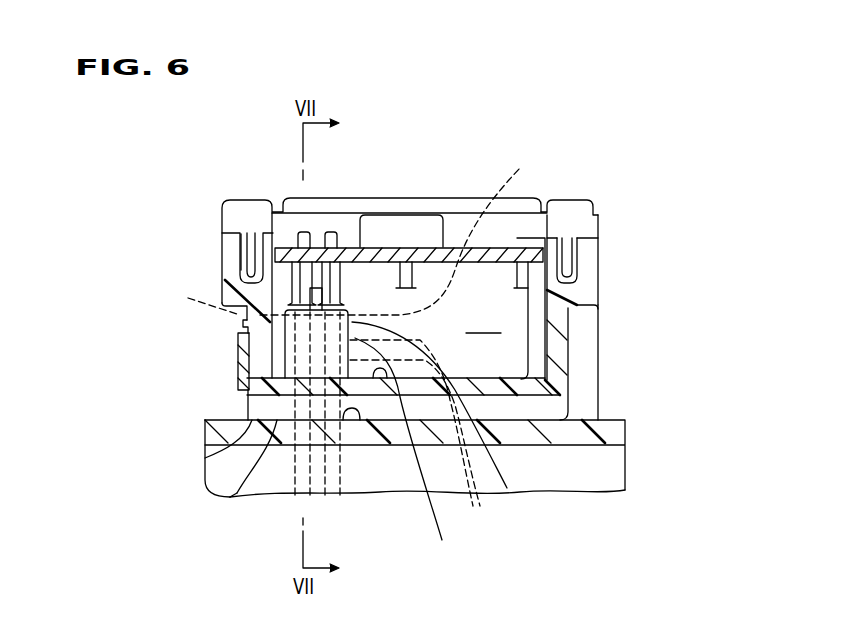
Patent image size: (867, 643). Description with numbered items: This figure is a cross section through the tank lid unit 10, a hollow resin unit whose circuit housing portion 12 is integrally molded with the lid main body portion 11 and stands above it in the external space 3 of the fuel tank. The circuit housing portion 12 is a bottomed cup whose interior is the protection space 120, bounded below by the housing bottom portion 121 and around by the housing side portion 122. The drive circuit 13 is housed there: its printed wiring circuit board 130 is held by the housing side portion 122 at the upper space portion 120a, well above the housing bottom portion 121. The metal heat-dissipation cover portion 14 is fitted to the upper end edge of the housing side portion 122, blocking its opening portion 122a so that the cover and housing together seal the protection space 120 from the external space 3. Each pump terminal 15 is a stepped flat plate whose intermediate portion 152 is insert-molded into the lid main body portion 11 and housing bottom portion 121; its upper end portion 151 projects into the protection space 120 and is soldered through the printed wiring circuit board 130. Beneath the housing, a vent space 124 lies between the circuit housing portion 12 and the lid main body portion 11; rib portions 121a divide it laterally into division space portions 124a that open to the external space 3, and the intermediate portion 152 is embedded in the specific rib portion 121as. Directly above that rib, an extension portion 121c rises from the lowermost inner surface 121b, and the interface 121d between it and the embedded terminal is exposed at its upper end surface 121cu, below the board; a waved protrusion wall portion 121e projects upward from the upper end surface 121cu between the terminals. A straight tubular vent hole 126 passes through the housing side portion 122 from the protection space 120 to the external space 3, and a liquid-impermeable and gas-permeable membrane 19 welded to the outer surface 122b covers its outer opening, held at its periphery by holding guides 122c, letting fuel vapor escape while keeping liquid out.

The external space 3 is at (160, 149).
The tank lid unit 10 is at (605, 221).
The lid main body portion 11 is at (622, 427).
The circuit housing portion 12 is at (568, 358).
The drive circuit 13 is at (572, 255).
The printed wiring circuit board 130 is at (629, 260).
The heat-dissipation cover portion 14 is at (365, 246).
The pump terminal 15 is at (338, 282).
The end portion of pump terminal 151 is at (307, 272).
The liquid-impermeable and gas-permeable membrane 19 is at (238, 352).
The protection space 120 is at (505, 309).
The upper space portion 120a is at (240, 235).
The housing bottom portion 121 is at (240, 466).
The rib portion 121a is at (236, 493).
The specific rib portion 121as is at (226, 521).
The lowermost inner surface 121b is at (411, 450).
The extension portion 121c is at (507, 488).
The upper end surface 121cu is at (437, 198).
The interface 121d is at (348, 227).
The protrusion wall portion 121e is at (252, 268).
The housing side portion 122 is at (237, 288).
The opening portion 122a is at (565, 200).
The outer surface 122b is at (248, 403).
The holding guide 122c is at (243, 325).
The vent space 124 is at (373, 430).
The division space portion 124a is at (359, 422).
The vent hole 126 is at (250, 383).
The intermediate portion of pump terminal 152 is at (428, 436).